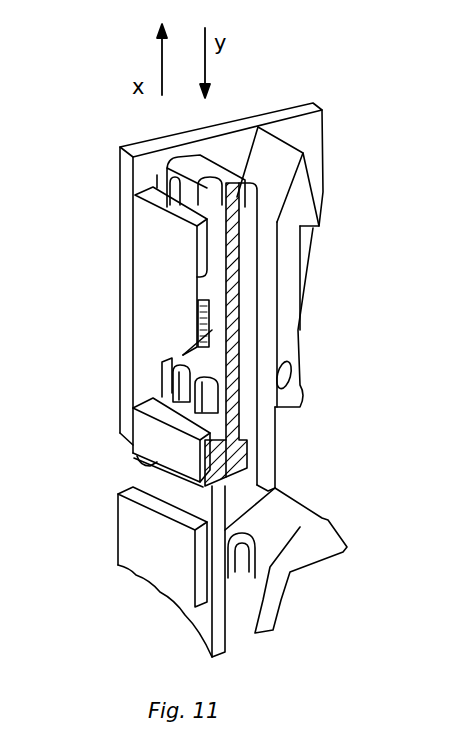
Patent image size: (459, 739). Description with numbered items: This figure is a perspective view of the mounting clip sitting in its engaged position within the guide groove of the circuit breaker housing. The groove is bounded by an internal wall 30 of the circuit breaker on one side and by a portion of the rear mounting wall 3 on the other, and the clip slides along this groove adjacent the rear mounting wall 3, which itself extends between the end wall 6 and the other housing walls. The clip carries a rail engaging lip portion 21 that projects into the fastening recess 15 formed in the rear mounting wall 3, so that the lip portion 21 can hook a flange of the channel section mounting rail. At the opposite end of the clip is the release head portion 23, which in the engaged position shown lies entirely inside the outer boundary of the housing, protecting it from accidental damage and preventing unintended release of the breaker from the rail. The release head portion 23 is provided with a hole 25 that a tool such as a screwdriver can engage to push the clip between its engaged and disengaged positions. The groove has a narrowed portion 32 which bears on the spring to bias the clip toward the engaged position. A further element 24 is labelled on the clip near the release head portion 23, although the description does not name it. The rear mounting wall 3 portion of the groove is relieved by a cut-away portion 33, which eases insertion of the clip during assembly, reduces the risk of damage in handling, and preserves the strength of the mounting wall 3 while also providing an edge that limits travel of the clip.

The rear mounting wall 3 is at (150, 262).
The end wall 6 is at (295, 108).
The fastening recess 15 is at (106, 473).
The rail engaging lip portion 21 is at (133, 453).
The release head portion 23 is at (163, 164).
The column post 24 is at (118, 150).
The hole 25 is at (197, 202).
The internal wall 30 is at (265, 402).
The narrowed portion 32 is at (252, 231).
The cut-away portion 33 is at (162, 372).